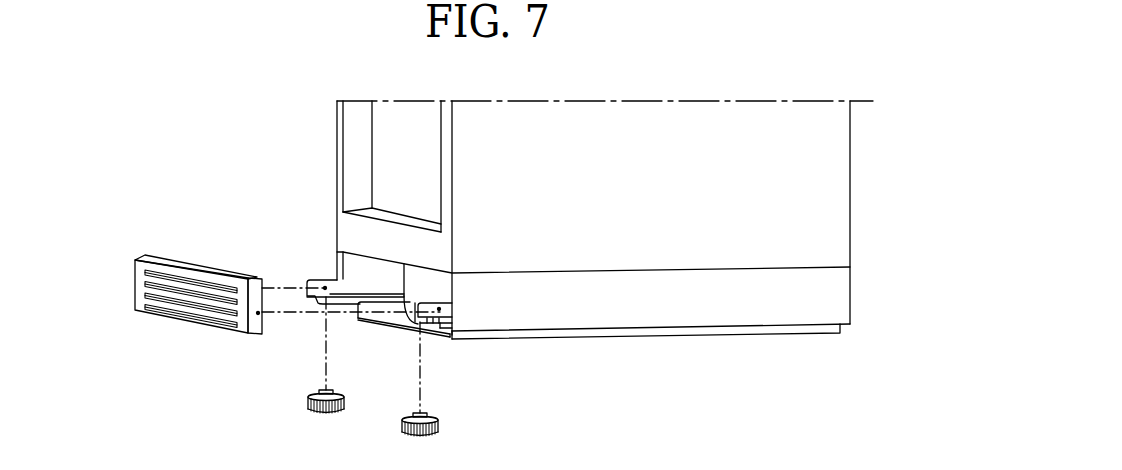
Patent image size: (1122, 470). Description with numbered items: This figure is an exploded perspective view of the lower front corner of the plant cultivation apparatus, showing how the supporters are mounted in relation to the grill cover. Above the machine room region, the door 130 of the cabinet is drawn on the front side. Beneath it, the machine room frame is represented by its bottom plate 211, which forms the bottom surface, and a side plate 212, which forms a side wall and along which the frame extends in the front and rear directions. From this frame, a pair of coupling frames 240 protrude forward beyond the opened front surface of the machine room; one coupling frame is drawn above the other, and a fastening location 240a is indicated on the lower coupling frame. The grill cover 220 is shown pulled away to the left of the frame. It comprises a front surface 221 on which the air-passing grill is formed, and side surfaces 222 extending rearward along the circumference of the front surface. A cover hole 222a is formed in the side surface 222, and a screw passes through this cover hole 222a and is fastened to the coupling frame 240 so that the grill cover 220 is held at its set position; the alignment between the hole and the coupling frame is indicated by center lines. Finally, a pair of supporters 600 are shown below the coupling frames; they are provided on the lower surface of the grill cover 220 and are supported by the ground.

The door 130 is at (447, 242).
The bottom plate 211 is at (433, 338).
The side plate 212 is at (602, 315).
The grill cover 220 is at (169, 309).
The front surface 221 is at (135, 282).
The side surface 222 is at (255, 278).
The cover hole 222a is at (258, 315).
The coupling frame 240 is at (313, 279).
The bracket hole 240a is at (440, 310).
The supporter 600 is at (462, 431).